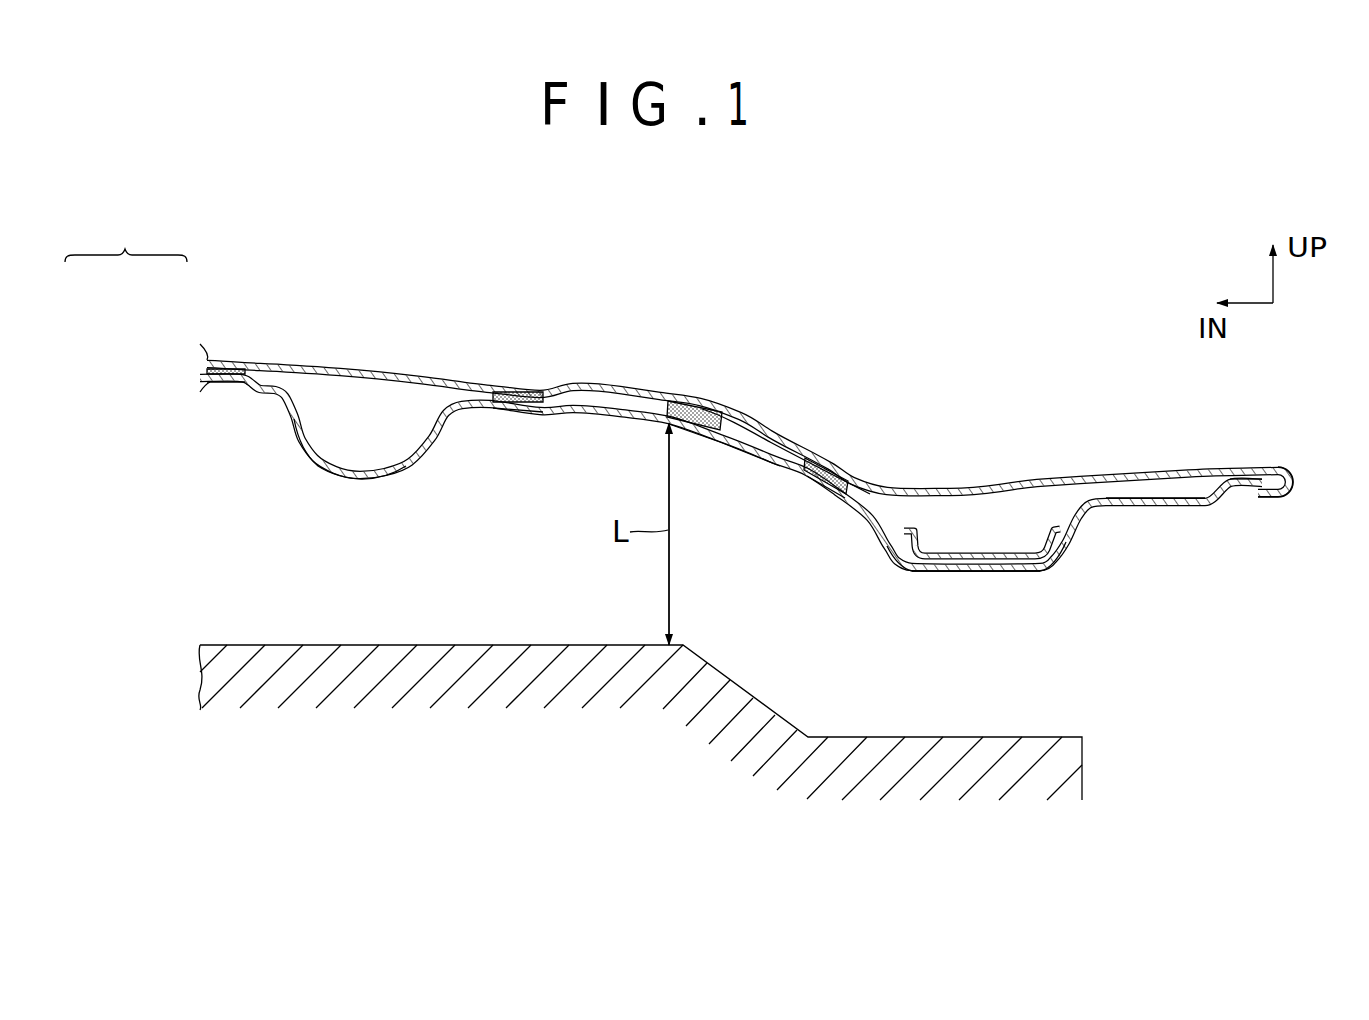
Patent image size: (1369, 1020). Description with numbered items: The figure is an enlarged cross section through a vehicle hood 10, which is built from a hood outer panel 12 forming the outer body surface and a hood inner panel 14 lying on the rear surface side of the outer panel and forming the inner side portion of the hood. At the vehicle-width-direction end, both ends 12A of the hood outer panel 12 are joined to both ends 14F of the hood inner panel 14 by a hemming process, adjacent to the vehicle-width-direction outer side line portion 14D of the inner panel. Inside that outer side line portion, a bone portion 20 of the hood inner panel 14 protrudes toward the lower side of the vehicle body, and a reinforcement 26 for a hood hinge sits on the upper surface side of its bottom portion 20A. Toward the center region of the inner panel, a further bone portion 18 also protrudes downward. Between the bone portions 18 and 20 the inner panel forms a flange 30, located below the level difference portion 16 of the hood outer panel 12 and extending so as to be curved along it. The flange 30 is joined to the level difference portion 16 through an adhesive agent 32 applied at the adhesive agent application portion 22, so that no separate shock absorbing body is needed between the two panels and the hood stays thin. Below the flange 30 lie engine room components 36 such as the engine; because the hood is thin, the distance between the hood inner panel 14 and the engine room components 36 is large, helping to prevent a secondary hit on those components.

The hood 10 is at (126, 237).
The hood outer panel 12 is at (223, 352).
The vehicle-width-direction both ends of the hood outer panel 12A is at (1268, 494).
The hood inner panel 14 is at (215, 392).
The vehicle-width-direction outer side line portion 14D is at (1104, 512).
The vehicle-width-direction both ends of the hood inner panel 14F is at (1243, 489).
The level difference portion 16 is at (736, 396).
The bone portion 18 is at (312, 466).
The bone portion 20 is at (992, 578).
The bottom portion 20A is at (951, 571).
The adhesive agent application portion 22 is at (222, 384).
The reinforcement 26 is at (973, 550).
The flange 30 is at (728, 446).
The adhesive agent 32 is at (230, 365).
The engine room components 36 is at (830, 726).